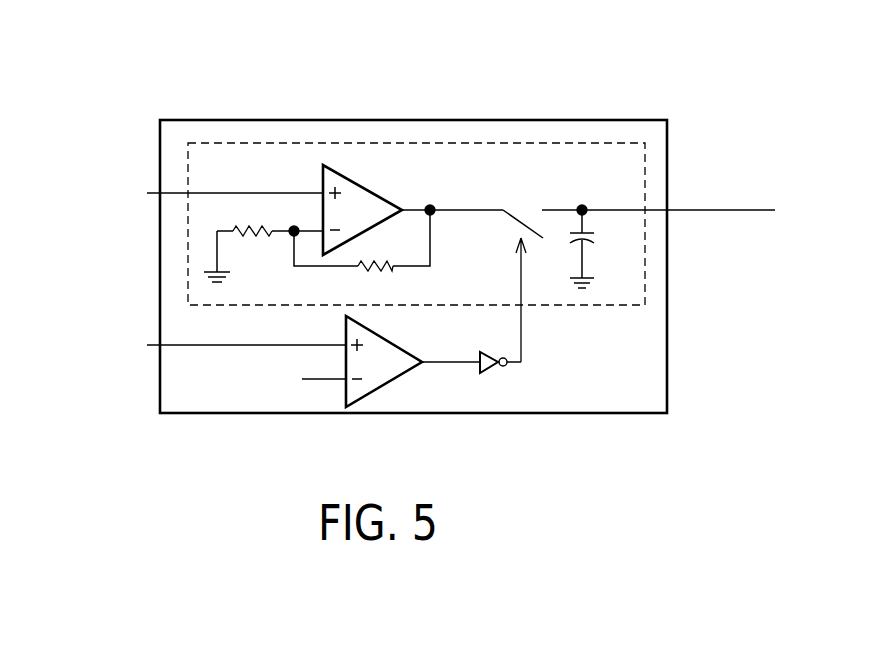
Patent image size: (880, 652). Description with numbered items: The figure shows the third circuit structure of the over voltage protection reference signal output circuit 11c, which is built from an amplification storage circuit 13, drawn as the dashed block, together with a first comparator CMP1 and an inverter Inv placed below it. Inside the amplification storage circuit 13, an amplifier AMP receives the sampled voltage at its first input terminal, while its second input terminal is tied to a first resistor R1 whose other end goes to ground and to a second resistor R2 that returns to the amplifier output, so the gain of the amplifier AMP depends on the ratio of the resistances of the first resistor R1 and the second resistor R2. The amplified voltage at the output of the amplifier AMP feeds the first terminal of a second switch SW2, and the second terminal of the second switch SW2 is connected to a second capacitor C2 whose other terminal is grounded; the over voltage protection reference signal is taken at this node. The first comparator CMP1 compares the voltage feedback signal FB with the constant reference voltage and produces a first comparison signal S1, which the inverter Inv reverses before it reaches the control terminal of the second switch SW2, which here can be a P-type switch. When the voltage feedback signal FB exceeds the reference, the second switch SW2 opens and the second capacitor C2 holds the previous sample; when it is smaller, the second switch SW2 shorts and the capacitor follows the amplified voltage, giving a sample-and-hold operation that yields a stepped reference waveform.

The over voltage protection reference signal output circuit 11c is at (584, 90).
The amplification storage circuit 13 is at (477, 143).
The amplifier AMP is at (411, 172).
The first resistor R1 is at (263, 254).
The second resistor R2 is at (362, 256).
The second switch SW2 is at (522, 269).
The second capacitor C2 is at (600, 246).
The first comparator CMP1 is at (403, 372).
The first comparison signal S1 is at (451, 345).
The inverter Inv is at (503, 367).
The voltage feedback signal FB is at (227, 344).